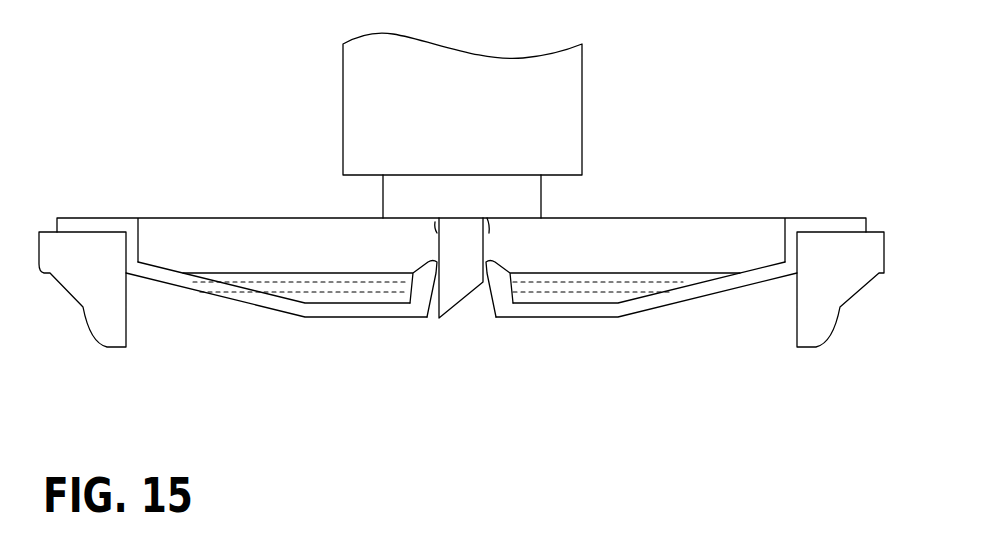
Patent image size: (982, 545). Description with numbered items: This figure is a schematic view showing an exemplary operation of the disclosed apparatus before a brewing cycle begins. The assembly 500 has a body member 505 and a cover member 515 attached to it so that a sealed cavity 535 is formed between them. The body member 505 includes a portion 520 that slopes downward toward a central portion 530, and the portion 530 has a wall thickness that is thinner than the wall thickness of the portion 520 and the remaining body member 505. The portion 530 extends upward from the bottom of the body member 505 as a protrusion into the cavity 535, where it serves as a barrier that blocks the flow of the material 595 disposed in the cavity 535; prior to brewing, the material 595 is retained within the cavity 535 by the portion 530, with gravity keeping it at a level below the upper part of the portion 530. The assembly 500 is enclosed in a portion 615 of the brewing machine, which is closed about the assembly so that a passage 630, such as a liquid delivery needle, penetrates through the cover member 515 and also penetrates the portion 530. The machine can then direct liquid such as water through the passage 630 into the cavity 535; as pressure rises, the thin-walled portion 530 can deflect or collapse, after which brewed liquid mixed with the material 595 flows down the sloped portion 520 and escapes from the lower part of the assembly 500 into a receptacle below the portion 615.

The assembly 500 is at (461, 224).
The body member 505 is at (175, 295).
The cover member 515 is at (658, 208).
The cavity 535 is at (737, 235).
The portion 520 is at (273, 310).
The portion 530 is at (470, 317).
The material 595 is at (583, 292).
The portion 615 is at (205, 350).
The passage 630 is at (428, 243).